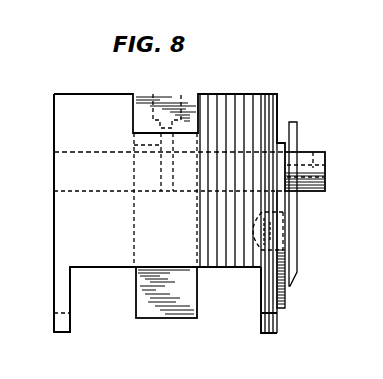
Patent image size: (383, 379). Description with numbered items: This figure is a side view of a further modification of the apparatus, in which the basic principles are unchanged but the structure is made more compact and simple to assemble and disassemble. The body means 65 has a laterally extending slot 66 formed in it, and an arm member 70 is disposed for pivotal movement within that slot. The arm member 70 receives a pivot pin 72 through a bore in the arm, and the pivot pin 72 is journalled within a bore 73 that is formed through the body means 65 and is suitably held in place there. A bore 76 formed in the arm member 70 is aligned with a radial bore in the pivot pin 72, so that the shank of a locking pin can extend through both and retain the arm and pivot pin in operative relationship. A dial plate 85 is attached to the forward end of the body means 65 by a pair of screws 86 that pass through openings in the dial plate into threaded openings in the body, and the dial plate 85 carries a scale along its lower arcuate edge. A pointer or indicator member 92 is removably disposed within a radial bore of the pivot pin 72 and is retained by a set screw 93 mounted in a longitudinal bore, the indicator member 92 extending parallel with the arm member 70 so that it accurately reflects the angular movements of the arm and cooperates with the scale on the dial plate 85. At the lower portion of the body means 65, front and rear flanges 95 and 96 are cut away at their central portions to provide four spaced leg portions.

The body means 65 is at (258, 86).
The laterally extending slot 66 is at (200, 232).
The arm member 70 is at (198, 290).
The pivot pin 72 is at (83, 213).
The bore 73 is at (90, 151).
The bore 76 is at (134, 150).
The dial plate 85 is at (286, 304).
The screws 86 is at (253, 246).
The indicator member 92 is at (297, 124).
The set screw 93 is at (312, 160).
The front flange 95 is at (268, 334).
The rear flange 96 is at (70, 333).